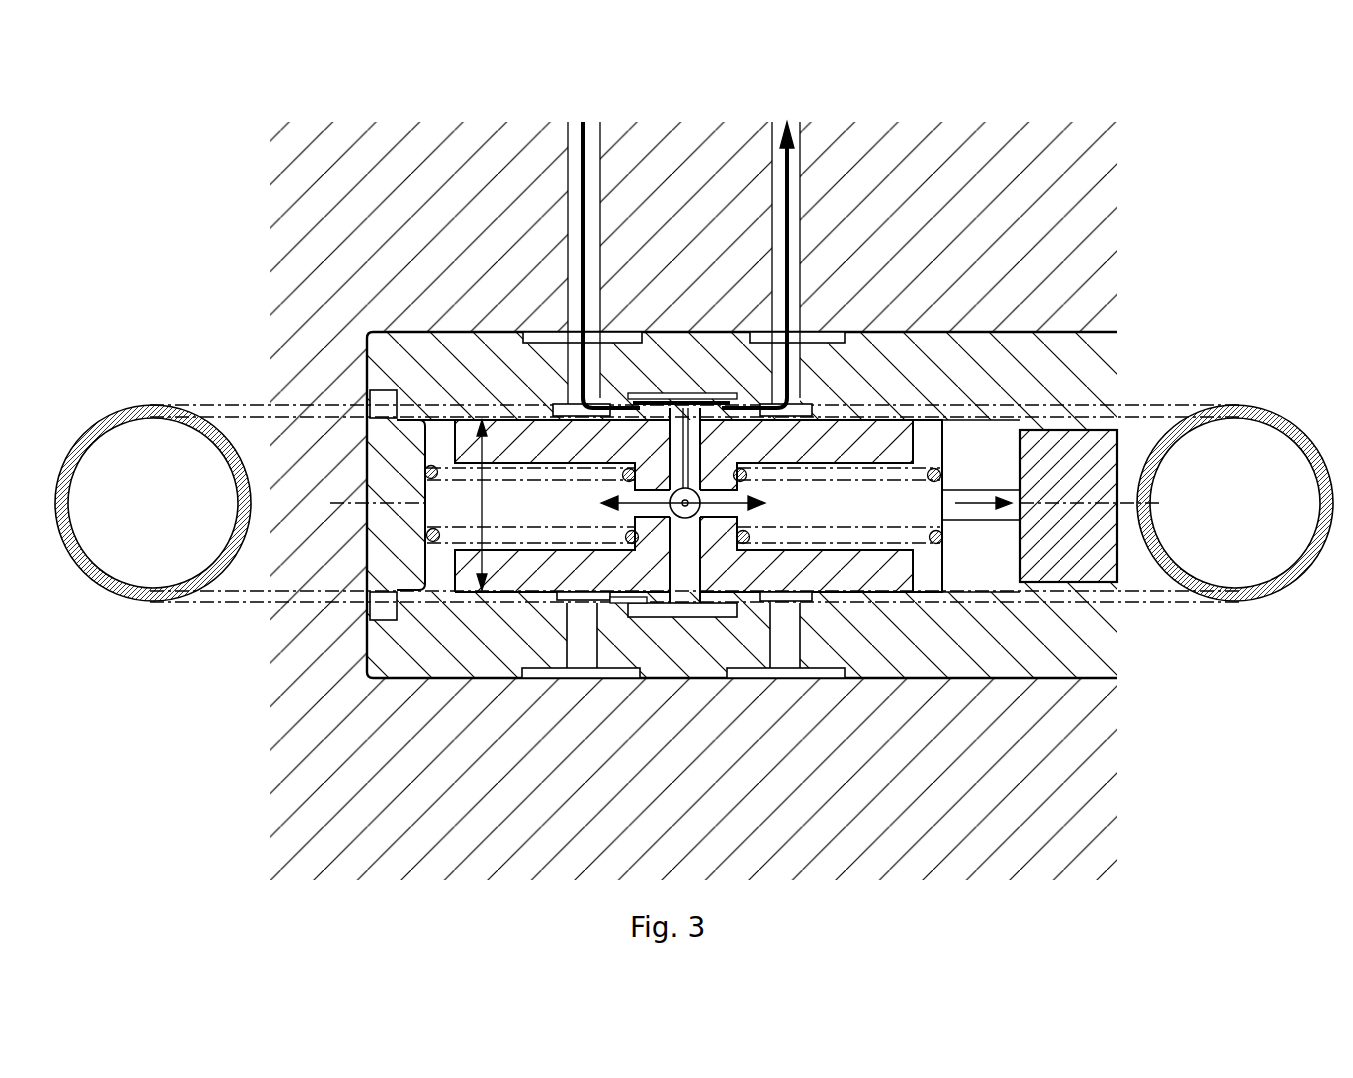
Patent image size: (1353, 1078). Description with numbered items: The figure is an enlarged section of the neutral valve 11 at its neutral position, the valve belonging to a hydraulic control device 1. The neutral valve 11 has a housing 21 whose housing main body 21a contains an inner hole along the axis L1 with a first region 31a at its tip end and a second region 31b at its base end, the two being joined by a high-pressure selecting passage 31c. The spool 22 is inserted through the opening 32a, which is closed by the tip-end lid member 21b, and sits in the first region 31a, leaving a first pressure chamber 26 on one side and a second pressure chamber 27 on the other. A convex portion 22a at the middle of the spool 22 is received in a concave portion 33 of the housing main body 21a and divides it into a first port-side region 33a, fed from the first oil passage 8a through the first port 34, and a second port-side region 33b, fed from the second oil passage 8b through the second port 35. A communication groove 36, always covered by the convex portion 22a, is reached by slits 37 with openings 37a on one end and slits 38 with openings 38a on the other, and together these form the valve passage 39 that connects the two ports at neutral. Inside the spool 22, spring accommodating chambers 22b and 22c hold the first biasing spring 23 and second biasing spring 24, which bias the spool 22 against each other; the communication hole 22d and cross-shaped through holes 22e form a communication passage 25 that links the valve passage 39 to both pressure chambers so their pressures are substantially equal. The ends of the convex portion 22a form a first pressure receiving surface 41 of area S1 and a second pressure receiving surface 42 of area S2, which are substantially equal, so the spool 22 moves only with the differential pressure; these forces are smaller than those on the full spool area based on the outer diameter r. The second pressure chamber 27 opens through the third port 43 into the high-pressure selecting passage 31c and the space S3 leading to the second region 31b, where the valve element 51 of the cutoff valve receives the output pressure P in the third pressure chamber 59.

The hydraulic control device 1 is at (1143, 172).
The neutral valve 11 is at (935, 280).
The housing 21 is at (712, 474).
The housing main body 21a is at (976, 345).
The tip-end lid member 21b is at (362, 420).
The spool 22 is at (703, 510).
The convex portion 22a is at (668, 395).
The spring accommodating chamber 22b is at (517, 420).
The spring accommodating chamber 22c is at (897, 425).
The communication hole 22d is at (700, 495).
The through holes 22e is at (683, 618).
The first biasing spring 23 is at (430, 525).
The second biasing spring 24 is at (947, 470).
The communication passage 25 is at (618, 605).
The first pressure chamber 26 is at (440, 592).
The second pressure chamber 27 is at (922, 578).
The first region 31a is at (865, 405).
The second region 31b is at (1086, 428).
The high-pressure selecting passage 31c is at (958, 525).
The opening 32a is at (368, 612).
The concave portion 33 is at (560, 403).
The first port-side region 33a is at (596, 404).
The second port-side region 33b is at (797, 404).
The first port 34 is at (565, 340).
The second port 35 is at (805, 340).
The communication groove 36 is at (687, 394).
The slits 37 is at (645, 345).
The openings 37a is at (580, 605).
The slits 38 is at (742, 340).
The openings 38a is at (790, 640).
The valve passage 39 is at (683, 505).
The first pressure receiving surface 41 is at (577, 597).
The second pressure receiving surface 42 is at (795, 597).
The third port 43 is at (1040, 488).
The valve element 51 is at (1115, 414).
The third pressure chamber 59 is at (1040, 546).
The first oil passage 8a is at (583, 113).
The second oil passage 8b is at (787, 113).
The pressure receiving area S1 is at (142, 406).
The pressure receiving area S2 is at (1228, 406).
The third space S3 is at (1012, 432).
The axis L1 is at (348, 500).
The output pressure P is at (985, 498).
The outer diameter r is at (488, 505).